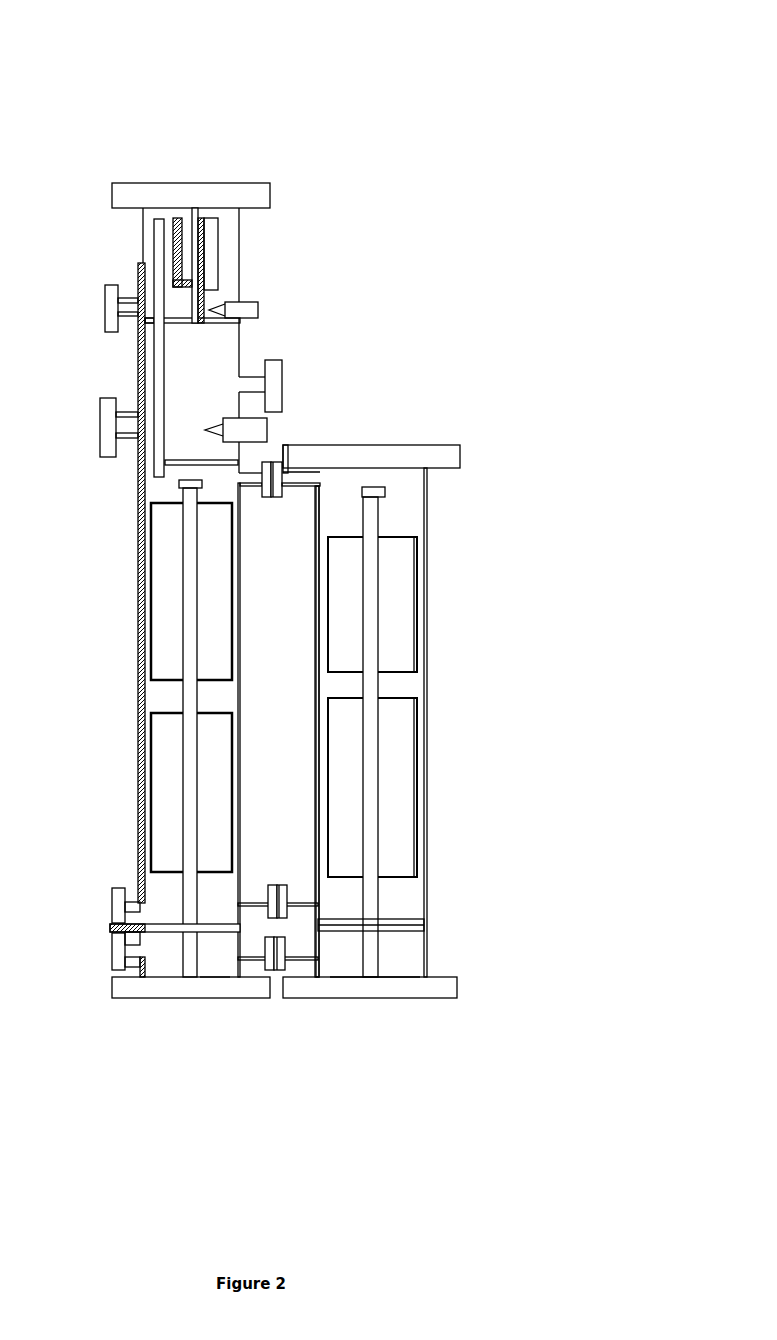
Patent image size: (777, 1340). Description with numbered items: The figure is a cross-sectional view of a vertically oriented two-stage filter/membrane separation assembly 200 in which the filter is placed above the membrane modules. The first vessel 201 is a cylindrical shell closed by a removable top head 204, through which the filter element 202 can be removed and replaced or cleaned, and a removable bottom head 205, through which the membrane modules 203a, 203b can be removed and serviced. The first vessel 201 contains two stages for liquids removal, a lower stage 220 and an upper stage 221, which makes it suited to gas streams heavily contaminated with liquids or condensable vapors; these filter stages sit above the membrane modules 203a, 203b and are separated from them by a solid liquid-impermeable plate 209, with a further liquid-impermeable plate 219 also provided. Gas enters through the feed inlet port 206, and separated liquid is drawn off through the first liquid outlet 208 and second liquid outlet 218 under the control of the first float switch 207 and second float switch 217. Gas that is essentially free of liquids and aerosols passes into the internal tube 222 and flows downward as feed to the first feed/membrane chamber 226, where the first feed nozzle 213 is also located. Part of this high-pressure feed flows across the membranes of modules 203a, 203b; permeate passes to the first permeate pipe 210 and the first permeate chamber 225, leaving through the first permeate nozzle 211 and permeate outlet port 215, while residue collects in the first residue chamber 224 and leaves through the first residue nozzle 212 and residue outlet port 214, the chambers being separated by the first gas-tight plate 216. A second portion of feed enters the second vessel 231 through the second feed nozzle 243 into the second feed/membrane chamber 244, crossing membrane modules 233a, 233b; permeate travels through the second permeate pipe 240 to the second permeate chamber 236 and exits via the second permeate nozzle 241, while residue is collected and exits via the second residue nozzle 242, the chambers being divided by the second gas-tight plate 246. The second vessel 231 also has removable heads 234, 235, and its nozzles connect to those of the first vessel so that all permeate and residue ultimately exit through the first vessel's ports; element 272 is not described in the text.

The two-stage filter/membrane separation assembly 200 is at (368, 45).
The first vessel 201 is at (151, 728).
The filter element 202 is at (213, 240).
The membrane module 203a is at (157, 567).
The membrane module 203b is at (158, 730).
The removable top head 204 is at (112, 998).
The removable bottom head 205 is at (112, 183).
The feed inlet port 206 is at (283, 367).
The first float switch 207 is at (268, 432).
The first liquid outlet 208 is at (100, 400).
The liquid-impermeable plate 209 is at (140, 462).
The first permeate pipe 210 is at (192, 622).
The first permeate nozzle 211 is at (240, 950).
The first residue nozzle 212 is at (240, 897).
The first feed nozzle 213 is at (247, 487).
The residue outlet port 214 is at (110, 888).
The permeate outlet port 215 is at (112, 950).
The first gas-tight plate 216 is at (112, 928).
The second float switch 217 is at (259, 308).
The second liquid outlet 218 is at (105, 288).
The liquid-impermeable plate 219 is at (140, 320).
The lower stage 220 is at (231, 347).
The upper stage 221 is at (231, 260).
The internal tube 222 is at (160, 228).
The first residue chamber 224 is at (220, 885).
The first permeate chamber 225 is at (213, 967).
The first feed/membrane chamber 226 is at (150, 490).
The second vessel 231 is at (428, 560).
The membrane module 233a is at (407, 640).
The membrane module 233b is at (405, 748).
The removable head 234 is at (457, 445).
The removable head 235 is at (457, 997).
The second permeate chamber 236 is at (417, 960).
The second permeate pipe 240 is at (368, 700).
The second permeate nozzle 241 is at (292, 950).
The second residue nozzle 242 is at (295, 893).
The second feed nozzle 243 is at (297, 487).
The second feed/membrane chamber 244 is at (420, 505).
The second gas-tight plate 246 is at (422, 923).
The compartment 272 is at (413, 892).